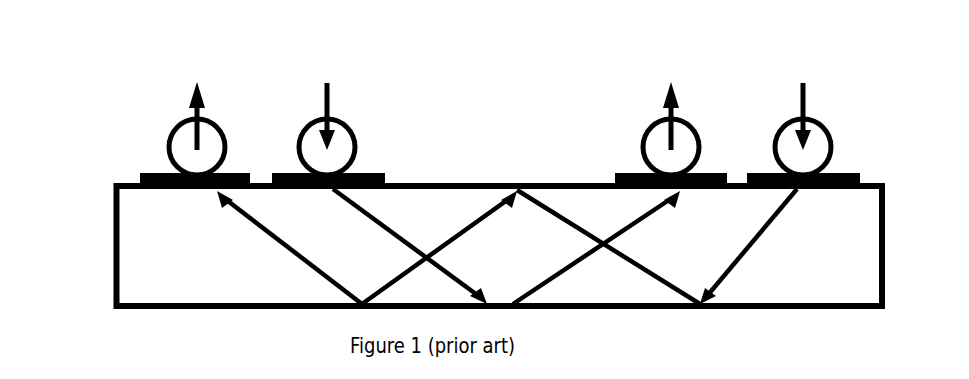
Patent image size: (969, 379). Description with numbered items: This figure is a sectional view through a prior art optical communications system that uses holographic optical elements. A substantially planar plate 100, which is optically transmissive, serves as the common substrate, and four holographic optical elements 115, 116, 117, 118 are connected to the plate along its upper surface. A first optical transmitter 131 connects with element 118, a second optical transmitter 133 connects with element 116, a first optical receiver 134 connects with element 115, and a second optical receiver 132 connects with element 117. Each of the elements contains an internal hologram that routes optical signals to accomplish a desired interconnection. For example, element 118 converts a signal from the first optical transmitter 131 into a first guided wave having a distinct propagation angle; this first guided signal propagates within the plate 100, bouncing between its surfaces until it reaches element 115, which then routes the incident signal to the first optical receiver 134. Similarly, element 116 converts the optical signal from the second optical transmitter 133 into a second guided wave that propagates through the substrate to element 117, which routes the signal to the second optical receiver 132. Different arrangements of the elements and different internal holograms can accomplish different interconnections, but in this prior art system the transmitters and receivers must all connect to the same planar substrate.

The substantially planar plate 100 is at (113, 250).
The holographic optical element 115 is at (143, 173).
The holographic optical element 116 is at (370, 173).
The holographic optical element 117 is at (615, 173).
The holographic optical element 118 is at (843, 173).
The first optical transmitter 131 is at (795, 124).
The second optical receiver 132 is at (647, 135).
The second optical transmitter 133 is at (303, 135).
The first optical receiver 134 is at (170, 135).